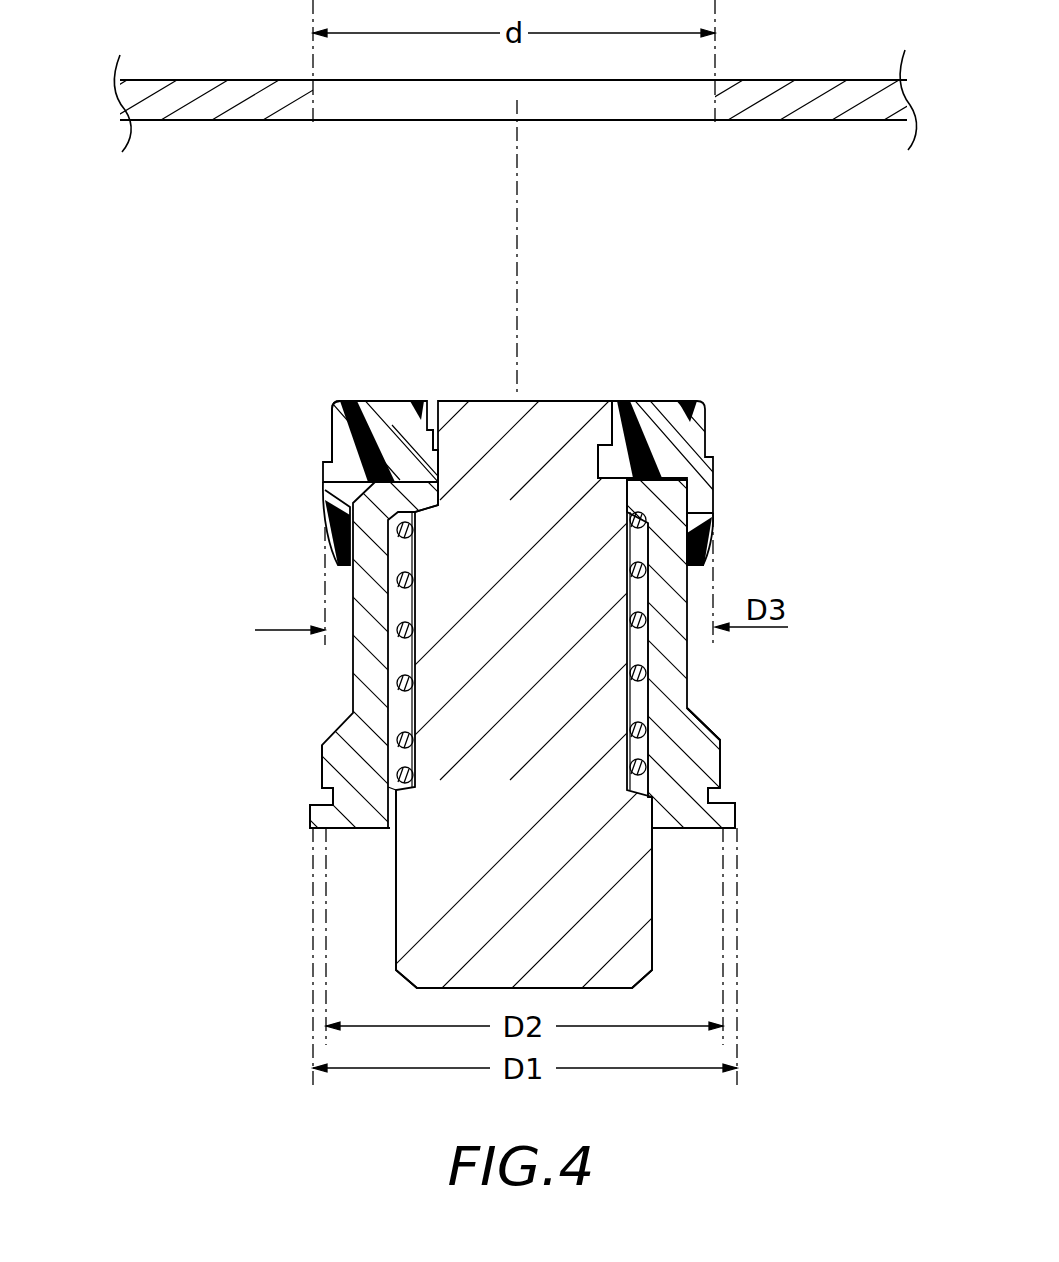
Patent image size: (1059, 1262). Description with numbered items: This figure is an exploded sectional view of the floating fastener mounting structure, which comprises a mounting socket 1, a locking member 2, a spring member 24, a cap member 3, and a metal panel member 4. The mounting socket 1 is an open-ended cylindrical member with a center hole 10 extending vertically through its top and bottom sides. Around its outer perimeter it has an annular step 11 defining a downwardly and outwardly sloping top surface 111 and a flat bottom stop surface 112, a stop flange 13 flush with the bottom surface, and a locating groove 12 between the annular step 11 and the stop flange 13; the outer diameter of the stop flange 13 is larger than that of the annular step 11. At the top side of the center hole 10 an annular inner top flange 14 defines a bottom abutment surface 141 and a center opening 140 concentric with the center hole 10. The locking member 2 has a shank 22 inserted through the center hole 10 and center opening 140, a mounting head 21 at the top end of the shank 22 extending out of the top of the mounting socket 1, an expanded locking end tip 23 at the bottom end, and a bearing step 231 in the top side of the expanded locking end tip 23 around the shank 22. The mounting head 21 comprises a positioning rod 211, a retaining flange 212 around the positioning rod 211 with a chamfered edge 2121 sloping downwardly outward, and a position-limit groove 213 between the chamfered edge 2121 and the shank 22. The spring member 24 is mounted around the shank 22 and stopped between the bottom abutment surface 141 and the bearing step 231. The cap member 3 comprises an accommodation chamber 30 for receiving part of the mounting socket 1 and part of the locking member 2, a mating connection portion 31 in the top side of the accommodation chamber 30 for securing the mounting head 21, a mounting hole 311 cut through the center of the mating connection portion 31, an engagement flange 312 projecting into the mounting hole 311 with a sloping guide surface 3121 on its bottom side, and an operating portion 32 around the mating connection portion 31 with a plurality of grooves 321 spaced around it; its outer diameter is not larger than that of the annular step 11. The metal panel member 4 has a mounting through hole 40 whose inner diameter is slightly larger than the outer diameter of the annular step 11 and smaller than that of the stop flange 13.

The mounting socket 1 is at (680, 615).
The center hole 10 is at (648, 705).
The annular step 11 is at (710, 752).
The top surface 111 is at (712, 728).
The bottom stop surface 112 is at (712, 780).
The locating groove 12 is at (735, 795).
The stop flange 13 is at (730, 818).
The annular inner top flange 14 is at (662, 473).
The center opening 140 is at (652, 450).
The bottom abutment surface 141 is at (632, 508).
The locking member 2 is at (629, 631).
The mounting head 21 is at (657, 631).
The positioning rod 211 is at (478, 405).
The retaining flange 212 is at (400, 455).
The chamfered edge 2121 is at (429, 445).
The position-limit groove 213 is at (396, 458).
The shank 22 is at (440, 715).
The expanded locking end tip 23 is at (415, 972).
The bearing step 231 is at (402, 777).
The spring member 24 is at (402, 680).
The cap member 3 is at (504, 420).
The accommodation chamber 30 is at (350, 487).
The mating connection portion 31 is at (672, 343).
The mounting hole 311 is at (614, 440).
The engagement flange 312 is at (598, 455).
The sloping guide surface 3121 is at (592, 440).
The operating portion 32 is at (342, 402).
The grooves 321 is at (333, 430).
The metal panel member 4 is at (811, 103).
The mounting through hole 40 is at (716, 103).